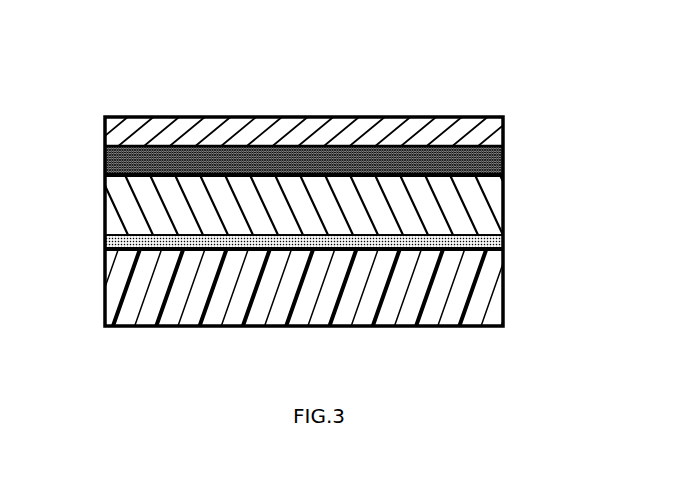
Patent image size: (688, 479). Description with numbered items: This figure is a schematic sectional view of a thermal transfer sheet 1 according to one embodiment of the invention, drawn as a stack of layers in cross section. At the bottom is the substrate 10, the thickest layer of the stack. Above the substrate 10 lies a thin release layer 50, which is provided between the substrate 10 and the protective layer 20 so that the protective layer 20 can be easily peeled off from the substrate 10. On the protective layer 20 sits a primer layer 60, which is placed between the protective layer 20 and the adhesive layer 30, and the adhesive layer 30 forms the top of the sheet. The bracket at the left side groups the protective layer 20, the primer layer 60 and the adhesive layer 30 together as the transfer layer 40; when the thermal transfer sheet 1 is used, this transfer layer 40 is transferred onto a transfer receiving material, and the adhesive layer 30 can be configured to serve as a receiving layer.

The thermal transfer sheet 1 is at (280, 104).
The substrate 10 is at (504, 290).
The protective layer 20 is at (504, 205).
The adhesive layer 30 is at (504, 126).
The transfer layer 40 is at (90, 120).
The release layer 50 is at (504, 238).
The primer layer 60 is at (504, 158).